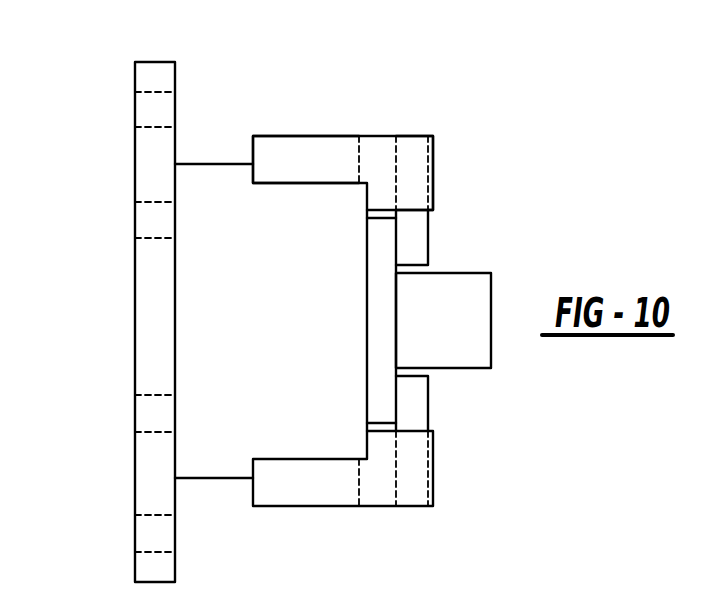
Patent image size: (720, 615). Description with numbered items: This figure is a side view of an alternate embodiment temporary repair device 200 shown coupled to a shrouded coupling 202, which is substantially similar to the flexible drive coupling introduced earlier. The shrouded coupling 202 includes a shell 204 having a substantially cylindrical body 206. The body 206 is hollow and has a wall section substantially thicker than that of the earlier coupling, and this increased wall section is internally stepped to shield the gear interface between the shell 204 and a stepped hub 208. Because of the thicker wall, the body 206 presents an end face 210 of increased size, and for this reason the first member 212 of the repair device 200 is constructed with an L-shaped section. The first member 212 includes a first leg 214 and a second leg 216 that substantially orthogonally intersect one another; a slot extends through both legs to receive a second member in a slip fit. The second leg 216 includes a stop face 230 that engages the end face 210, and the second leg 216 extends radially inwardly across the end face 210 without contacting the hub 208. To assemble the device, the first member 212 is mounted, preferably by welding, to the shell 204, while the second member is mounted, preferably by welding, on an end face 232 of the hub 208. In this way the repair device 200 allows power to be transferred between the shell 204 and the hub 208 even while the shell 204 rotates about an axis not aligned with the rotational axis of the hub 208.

The repair device 200 is at (487, 121).
The shrouded coupling 202 is at (212, 154).
The shell 204 is at (202, 480).
The body 206 is at (187, 282).
The stepped hub 208 is at (379, 383).
The end face 210 is at (367, 200).
The first member 212 is at (303, 137).
The first leg 214 is at (276, 160).
The second leg 216 is at (415, 168).
The stop face 230 is at (367, 202).
The end face 232 is at (397, 289).